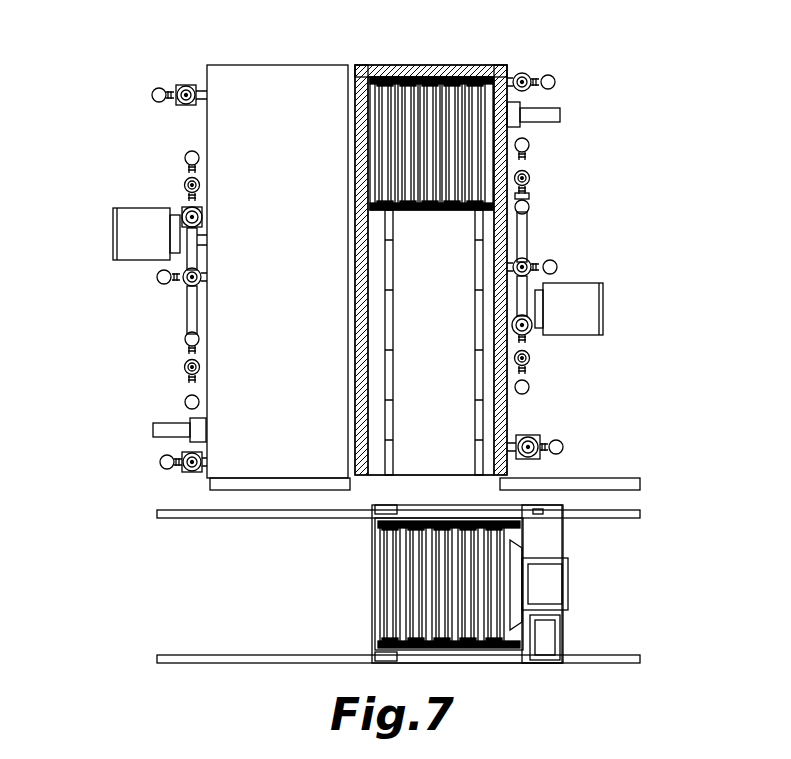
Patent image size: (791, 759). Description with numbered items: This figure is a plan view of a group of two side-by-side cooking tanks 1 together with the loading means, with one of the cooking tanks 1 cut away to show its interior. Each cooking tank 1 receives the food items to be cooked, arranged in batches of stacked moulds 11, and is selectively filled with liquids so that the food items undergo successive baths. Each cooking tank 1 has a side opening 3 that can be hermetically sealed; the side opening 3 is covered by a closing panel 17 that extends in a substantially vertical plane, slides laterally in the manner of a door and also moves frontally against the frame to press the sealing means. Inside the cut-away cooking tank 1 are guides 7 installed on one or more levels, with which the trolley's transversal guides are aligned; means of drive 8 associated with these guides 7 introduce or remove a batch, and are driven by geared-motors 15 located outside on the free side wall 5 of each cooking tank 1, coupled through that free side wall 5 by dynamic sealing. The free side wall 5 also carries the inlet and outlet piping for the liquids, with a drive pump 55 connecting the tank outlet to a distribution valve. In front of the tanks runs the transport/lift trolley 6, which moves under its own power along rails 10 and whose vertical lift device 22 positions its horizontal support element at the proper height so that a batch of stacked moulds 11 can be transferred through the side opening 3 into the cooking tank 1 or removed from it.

The cooking tank 1 is at (286, 78).
The side opening 3 is at (404, 484).
The free side wall 5 is at (206, 123).
The transport/lift trolley 6 is at (488, 660).
The guides 7 is at (384, 428).
The means of drive 8 is at (474, 330).
The rails 10 is at (214, 664).
The stacked moulds 11 is at (385, 612).
The geared-motor 15 is at (152, 431).
The closing panel 17 is at (244, 485).
The vertical lift device 22 is at (562, 590).
The drive pump 55 is at (118, 232).